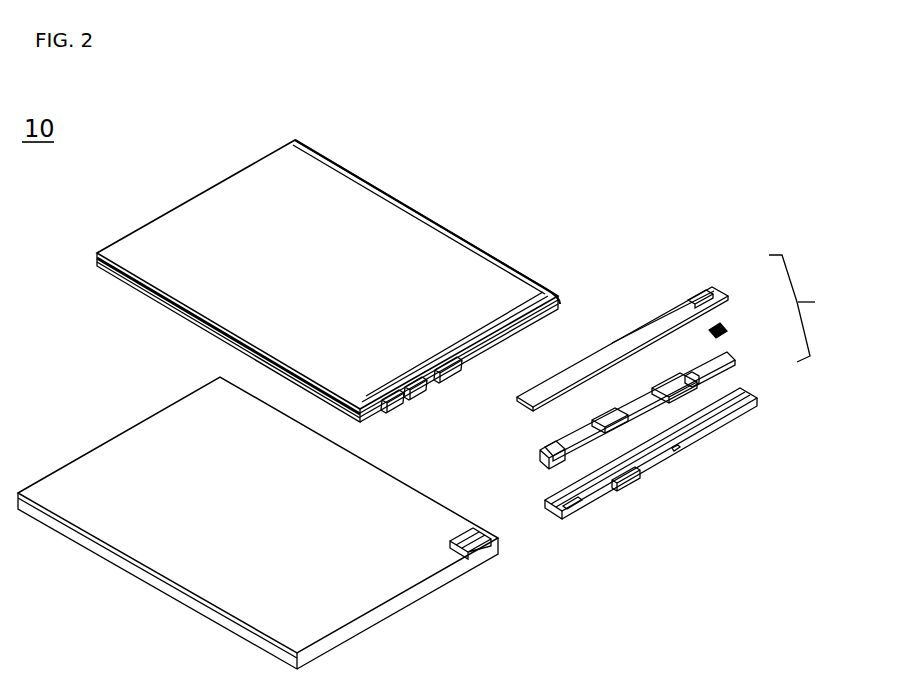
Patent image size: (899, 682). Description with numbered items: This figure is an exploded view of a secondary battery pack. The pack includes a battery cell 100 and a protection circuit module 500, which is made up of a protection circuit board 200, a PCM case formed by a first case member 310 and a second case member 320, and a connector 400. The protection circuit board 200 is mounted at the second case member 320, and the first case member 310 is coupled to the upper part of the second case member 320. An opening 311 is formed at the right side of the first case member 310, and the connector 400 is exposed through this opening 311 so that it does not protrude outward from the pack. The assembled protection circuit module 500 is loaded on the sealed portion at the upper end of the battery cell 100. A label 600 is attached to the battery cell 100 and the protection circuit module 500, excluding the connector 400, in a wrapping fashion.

The battery cell 100 is at (430, 244).
The protection circuit board 200 is at (733, 352).
The first case member 310 is at (722, 287).
The opening 311 is at (706, 297).
The second case member 320 is at (748, 390).
The connector 400 is at (725, 322).
The protection circuit module 500 is at (806, 308).
The label 600 is at (400, 500).